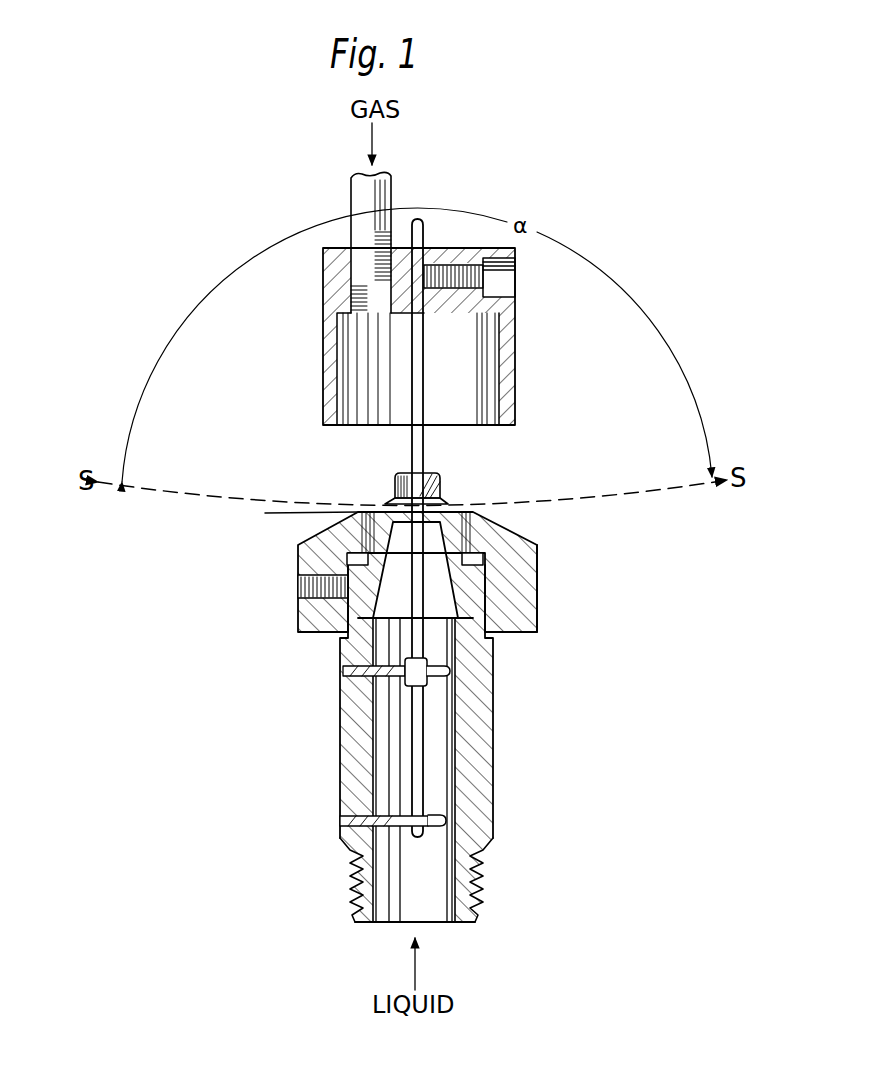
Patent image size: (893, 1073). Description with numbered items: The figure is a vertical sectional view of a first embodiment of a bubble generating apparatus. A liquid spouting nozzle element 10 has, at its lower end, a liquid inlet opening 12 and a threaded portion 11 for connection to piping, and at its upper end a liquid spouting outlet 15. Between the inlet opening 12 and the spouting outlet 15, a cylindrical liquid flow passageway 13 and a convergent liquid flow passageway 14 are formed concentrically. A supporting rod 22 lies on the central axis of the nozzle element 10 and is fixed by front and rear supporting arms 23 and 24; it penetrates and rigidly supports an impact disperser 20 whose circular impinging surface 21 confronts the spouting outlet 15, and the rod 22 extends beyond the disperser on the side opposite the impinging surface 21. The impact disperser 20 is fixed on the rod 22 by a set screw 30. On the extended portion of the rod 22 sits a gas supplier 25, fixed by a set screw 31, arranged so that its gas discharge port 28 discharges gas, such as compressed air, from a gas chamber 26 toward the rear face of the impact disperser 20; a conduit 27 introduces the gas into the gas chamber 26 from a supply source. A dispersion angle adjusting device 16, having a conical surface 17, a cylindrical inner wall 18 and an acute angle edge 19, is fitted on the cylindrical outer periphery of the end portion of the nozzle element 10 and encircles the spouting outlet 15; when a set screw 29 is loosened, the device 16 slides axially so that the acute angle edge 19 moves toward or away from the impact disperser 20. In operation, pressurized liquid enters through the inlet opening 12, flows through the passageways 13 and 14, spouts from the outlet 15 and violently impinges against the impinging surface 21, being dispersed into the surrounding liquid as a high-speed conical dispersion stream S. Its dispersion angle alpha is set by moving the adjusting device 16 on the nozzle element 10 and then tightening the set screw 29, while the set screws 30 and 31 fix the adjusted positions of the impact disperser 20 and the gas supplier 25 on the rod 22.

The liquid spouting nozzle element 10 is at (496, 738).
The threaded portion 11 is at (488, 860).
The liquid inlet opening 12 is at (432, 920).
The cylindrical liquid flow passageway 13 is at (436, 892).
The convergent liquid flow passageway 14 is at (446, 604).
The liquid spouting outlet 15 is at (539, 552).
The dispersion angle adjusting device 16 is at (540, 572).
The conical surface 17 is at (505, 533).
The cylindrical inner wall 18 is at (363, 536).
The acute angle edge 19 is at (265, 513).
The impact disperser 20 is at (444, 483).
The impinging surface 21 is at (452, 503).
The supporting rod 22 is at (415, 706).
The front supporting arm 23 is at (343, 671).
The rear supporting arm 24 is at (341, 820).
The gas supplier 25 is at (516, 342).
The gas chamber 26 is at (462, 398).
The conduit 27 is at (391, 182).
The gas discharge port 28 is at (458, 426).
The set screw 29 is at (299, 582).
The set screw 30 is at (396, 482).
The set screw 31 is at (453, 268).